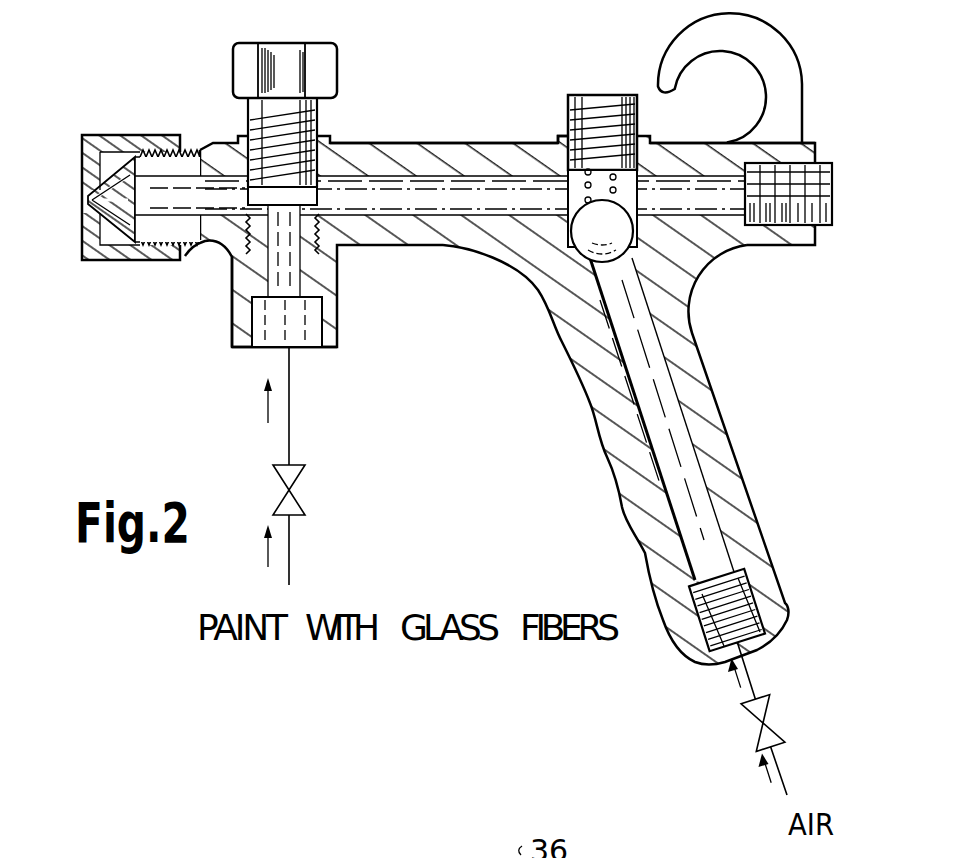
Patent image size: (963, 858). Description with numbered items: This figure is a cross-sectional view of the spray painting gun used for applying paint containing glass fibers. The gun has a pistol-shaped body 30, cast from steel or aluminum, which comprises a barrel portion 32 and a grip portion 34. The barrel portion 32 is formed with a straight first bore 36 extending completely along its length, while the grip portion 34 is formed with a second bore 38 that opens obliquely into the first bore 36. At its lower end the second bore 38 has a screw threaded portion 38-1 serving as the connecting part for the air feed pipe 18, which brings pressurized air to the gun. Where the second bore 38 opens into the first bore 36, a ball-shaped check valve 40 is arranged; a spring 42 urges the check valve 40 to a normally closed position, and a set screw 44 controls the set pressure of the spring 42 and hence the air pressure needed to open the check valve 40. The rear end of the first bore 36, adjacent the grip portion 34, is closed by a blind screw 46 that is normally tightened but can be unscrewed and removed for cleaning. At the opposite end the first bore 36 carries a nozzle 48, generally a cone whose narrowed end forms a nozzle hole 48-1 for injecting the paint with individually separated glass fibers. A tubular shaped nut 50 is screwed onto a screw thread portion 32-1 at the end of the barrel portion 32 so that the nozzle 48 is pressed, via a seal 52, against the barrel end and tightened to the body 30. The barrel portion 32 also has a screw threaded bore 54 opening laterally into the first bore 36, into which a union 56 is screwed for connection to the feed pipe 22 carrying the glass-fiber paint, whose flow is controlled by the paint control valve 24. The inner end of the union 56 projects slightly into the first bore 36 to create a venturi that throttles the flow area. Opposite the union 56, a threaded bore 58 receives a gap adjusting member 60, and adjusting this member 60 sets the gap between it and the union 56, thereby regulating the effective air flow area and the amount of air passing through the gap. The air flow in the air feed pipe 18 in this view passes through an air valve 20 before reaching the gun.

The air feed pipe 18 is at (787, 793).
The air valve 20 is at (750, 722).
The feed pipe 22 is at (293, 572).
The paint control valve 24 is at (303, 497).
The body 30 is at (710, 292).
The barrel portion 32 is at (433, 160).
The screw thread portion 32-1 is at (203, 232).
The grip portion 34 is at (710, 393).
The first bore 36 is at (442, 210).
The second bore 38 is at (697, 484).
The screw threaded portion 38-1 is at (767, 644).
The check valve 40 is at (586, 250).
The spring 42 is at (556, 150).
The set screw 44 is at (605, 100).
The blind screw 46 is at (790, 175).
The nozzle 48 is at (110, 262).
The nozzle hole 48-1 is at (86, 196).
The tubular shaped nut 50 is at (153, 263).
The seal 52 is at (137, 157).
The screw threaded bore 54 is at (232, 292).
The union 56 is at (304, 303).
The bore 58 is at (328, 130).
The gap adjusting member 60 is at (326, 52).